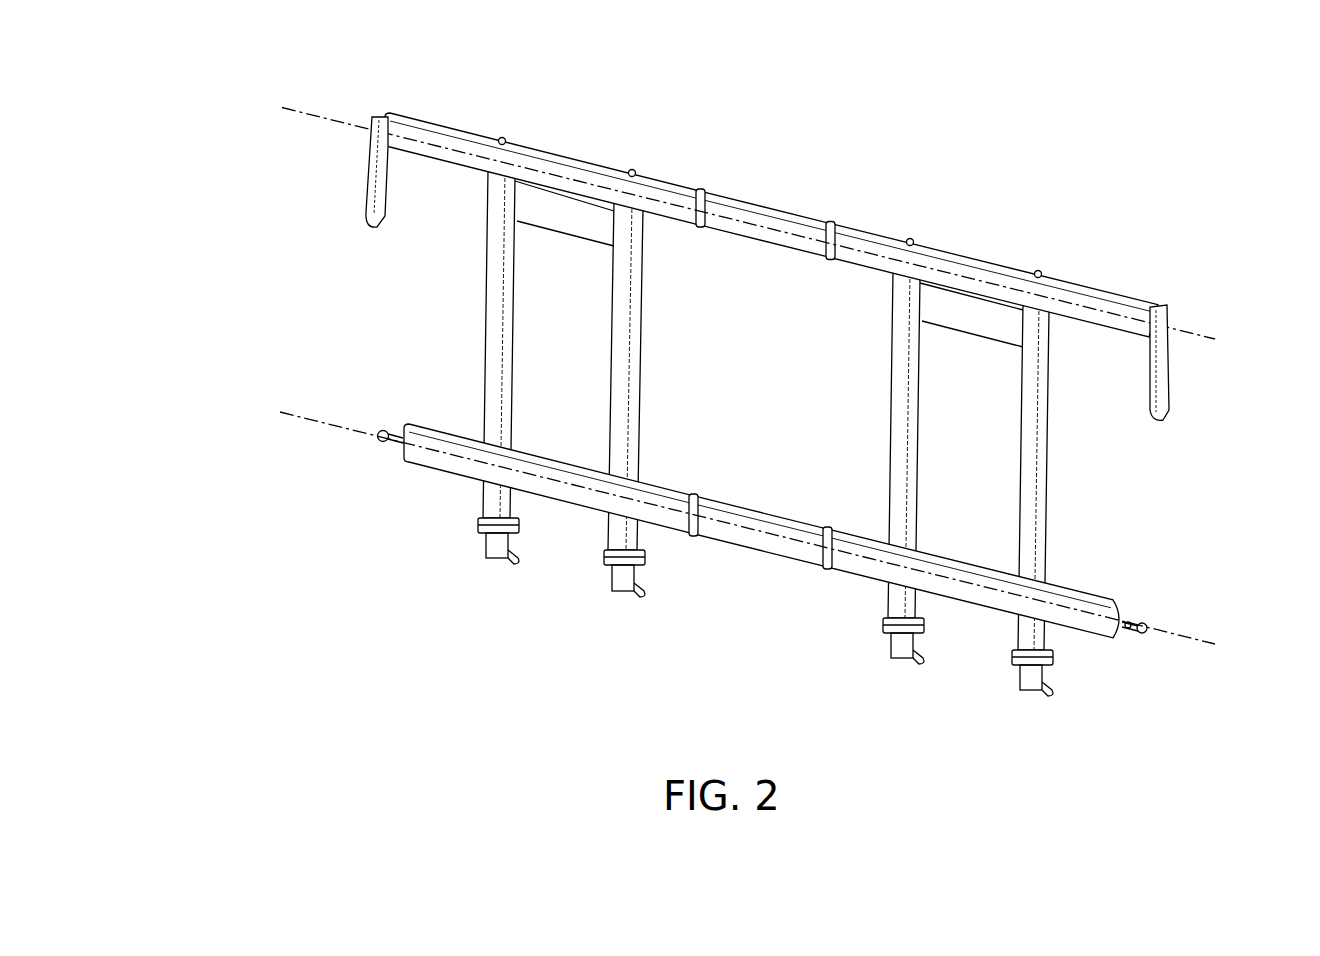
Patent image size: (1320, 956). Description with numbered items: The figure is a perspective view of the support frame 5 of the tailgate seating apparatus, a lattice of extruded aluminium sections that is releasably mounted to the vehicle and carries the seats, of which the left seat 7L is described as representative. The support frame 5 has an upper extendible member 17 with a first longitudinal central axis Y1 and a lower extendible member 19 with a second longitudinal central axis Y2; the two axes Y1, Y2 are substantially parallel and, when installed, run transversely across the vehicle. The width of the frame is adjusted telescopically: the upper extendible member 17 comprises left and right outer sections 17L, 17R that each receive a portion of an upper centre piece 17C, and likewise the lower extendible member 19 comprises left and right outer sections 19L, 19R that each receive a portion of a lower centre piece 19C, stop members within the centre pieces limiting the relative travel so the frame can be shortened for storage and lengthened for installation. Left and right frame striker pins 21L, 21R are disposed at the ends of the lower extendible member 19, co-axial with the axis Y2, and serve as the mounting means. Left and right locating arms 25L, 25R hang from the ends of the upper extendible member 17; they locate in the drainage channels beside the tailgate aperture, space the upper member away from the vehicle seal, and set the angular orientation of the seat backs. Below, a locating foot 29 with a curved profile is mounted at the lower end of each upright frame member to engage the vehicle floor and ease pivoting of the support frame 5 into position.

The support frame 5 is at (1168, 150).
The left seat 7L is at (218, 504).
The upper extendible member 17 is at (848, 190).
The left outer section 17L is at (590, 168).
The upper centre piece 17C is at (787, 209).
The right outer section 17R is at (1078, 292).
The lower extendible member 19 is at (769, 494).
The left outer section 19L is at (600, 502).
The lower centre piece 19C is at (773, 540).
The right outer section 19R is at (978, 597).
The left frame striker pin 21L is at (390, 442).
The right frame striker pin 21R is at (1127, 623).
The left locating arm 25L is at (370, 183).
The right locating arm 25R is at (1169, 378).
The locating foot 29 is at (493, 543).
The first longitudinal central axis Y1 is at (745, 212).
The second longitudinal central axis Y2 is at (745, 514).